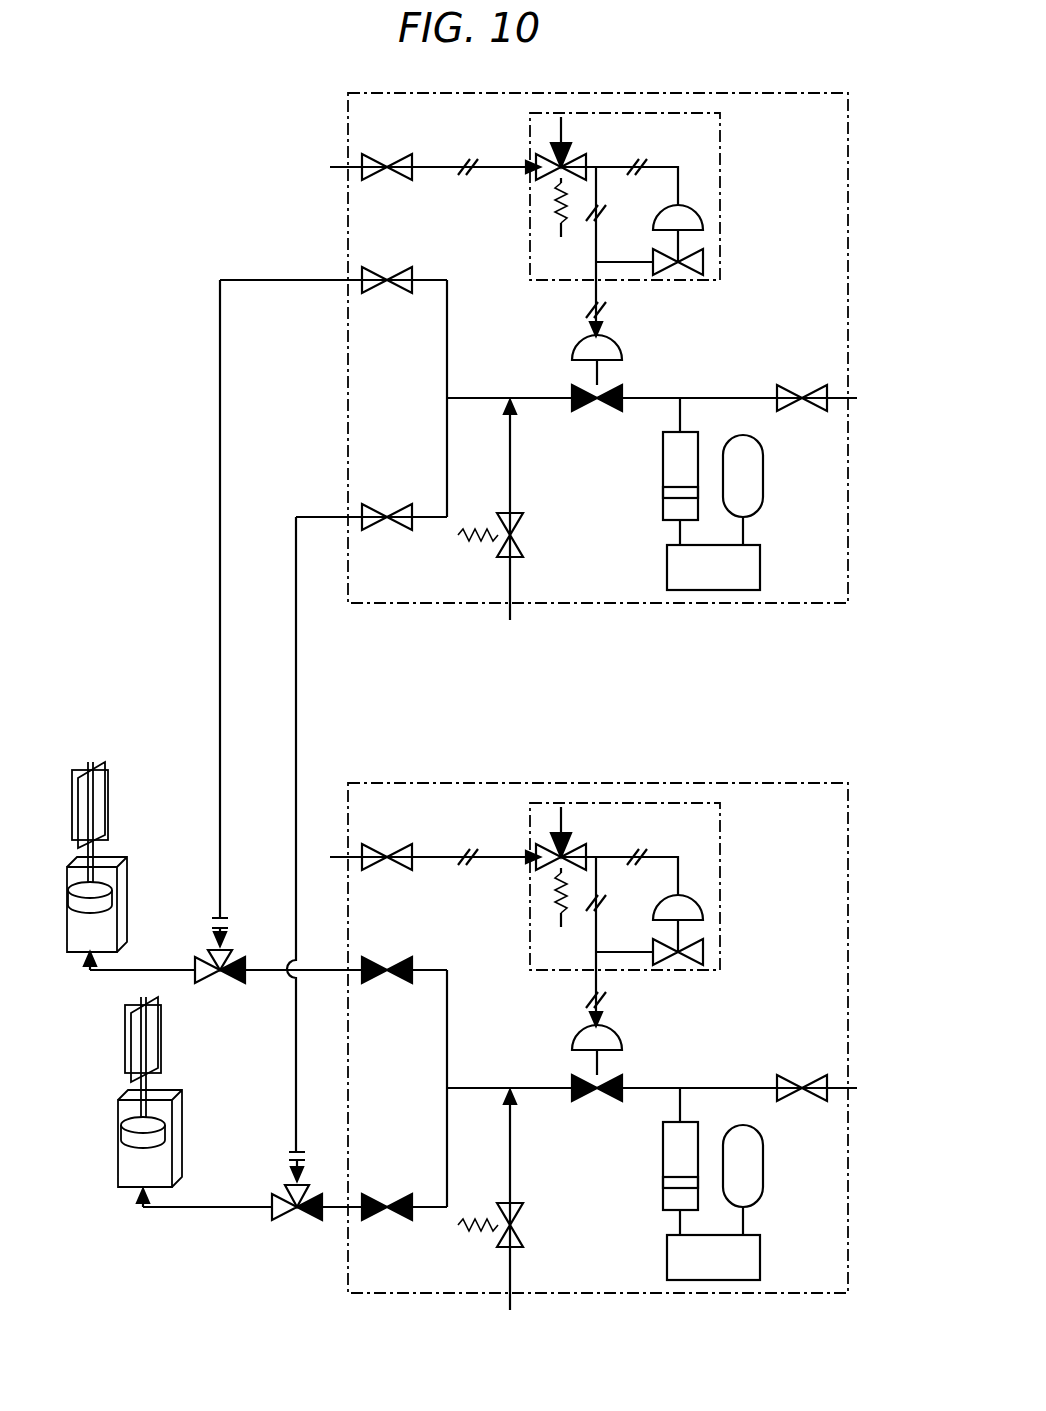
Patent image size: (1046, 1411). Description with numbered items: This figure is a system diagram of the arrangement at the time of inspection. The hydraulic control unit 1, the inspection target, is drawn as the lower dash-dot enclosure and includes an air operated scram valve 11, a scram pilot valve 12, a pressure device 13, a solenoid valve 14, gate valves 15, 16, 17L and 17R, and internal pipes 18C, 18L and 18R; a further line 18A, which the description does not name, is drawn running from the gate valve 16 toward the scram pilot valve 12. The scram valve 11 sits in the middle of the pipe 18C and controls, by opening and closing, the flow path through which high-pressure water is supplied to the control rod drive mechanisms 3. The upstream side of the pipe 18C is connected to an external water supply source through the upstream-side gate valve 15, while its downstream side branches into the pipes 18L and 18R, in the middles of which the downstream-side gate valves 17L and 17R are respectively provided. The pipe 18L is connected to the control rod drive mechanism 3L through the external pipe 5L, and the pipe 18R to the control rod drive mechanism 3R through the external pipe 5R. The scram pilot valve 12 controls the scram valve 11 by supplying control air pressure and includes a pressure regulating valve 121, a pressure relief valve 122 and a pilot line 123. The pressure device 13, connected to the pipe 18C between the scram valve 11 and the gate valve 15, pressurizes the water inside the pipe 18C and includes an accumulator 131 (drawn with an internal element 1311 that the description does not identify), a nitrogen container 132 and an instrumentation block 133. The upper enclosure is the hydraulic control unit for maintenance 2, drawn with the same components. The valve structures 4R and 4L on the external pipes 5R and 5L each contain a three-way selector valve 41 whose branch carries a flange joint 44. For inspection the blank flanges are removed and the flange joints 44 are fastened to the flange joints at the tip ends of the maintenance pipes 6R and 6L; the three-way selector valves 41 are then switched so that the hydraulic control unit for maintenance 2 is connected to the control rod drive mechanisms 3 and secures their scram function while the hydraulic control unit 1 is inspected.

The hydraulic control unit 1 is at (755, 783).
The hydraulic control unit for maintenance 2 is at (430, 607).
The control rod drive mechanism 3 is at (258, 1029).
The control rod drive mechanism 3R is at (85, 955).
The control rod drive mechanism 3L is at (133, 1190).
The valve structure 4R is at (226, 907).
The valve structure 4L is at (276, 1178).
The external pipe 5R is at (150, 967).
The external pipe 5L is at (185, 1212).
The maintenance pipe 6R is at (215, 475).
The maintenance pipe 6L is at (298, 700).
The air operated scram valve 11 is at (572, 352).
The scram pilot valve 12 is at (723, 138).
The pressure regulating valve 121 is at (703, 217).
The pressure relief valve 122 is at (556, 152).
The pilot line 123 is at (672, 164).
The pressure device 13 is at (764, 450).
The accumulator 131 is at (662, 462).
The piston 1311 is at (672, 493).
The nitrogen container 132 is at (748, 478).
The instrumentation block 133 is at (748, 562).
The solenoid valve 14 is at (522, 540).
The upstream-side gate valve 15 is at (792, 385).
The gate valve 16 is at (390, 155).
The downstream-side gate valve 17R is at (378, 268).
The downstream-side gate valve 17L is at (396, 506).
The inlet passage 18A is at (447, 170).
The internal pipe 18C is at (713, 397).
The internal pipe 18R is at (449, 297).
The internal pipe 18L is at (445, 427).
The three-way selector valve 41 is at (232, 985).
The flange joint 44 is at (212, 915).